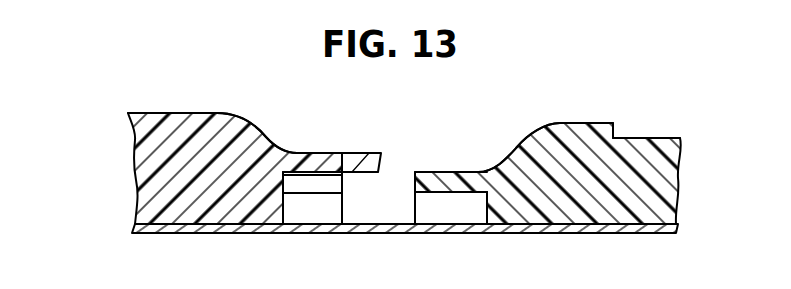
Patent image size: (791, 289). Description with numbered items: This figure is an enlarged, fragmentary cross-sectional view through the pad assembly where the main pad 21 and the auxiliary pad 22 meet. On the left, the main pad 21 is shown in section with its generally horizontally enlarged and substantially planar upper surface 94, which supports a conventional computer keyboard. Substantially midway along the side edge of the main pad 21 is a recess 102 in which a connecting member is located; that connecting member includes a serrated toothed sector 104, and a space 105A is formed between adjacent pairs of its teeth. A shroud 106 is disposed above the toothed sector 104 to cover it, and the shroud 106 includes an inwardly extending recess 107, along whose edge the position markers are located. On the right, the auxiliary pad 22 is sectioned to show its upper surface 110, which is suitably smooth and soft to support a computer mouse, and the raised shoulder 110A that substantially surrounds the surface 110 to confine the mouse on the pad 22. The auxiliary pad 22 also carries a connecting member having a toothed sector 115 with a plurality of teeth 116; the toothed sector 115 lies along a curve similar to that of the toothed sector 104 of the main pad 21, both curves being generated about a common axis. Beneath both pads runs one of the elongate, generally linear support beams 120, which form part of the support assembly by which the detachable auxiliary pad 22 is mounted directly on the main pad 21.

The main pad 21 is at (153, 142).
The upper surface 94 is at (159, 113).
The recess 102 is at (268, 136).
The shroud 106 is at (330, 158).
The recess 107 is at (363, 163).
The space 105A is at (306, 184).
The toothed sector 104 is at (358, 190).
The auxiliary pad 22 is at (578, 119).
The raised shoulder 110A is at (555, 124).
The upper surface 110 is at (663, 138).
The toothed sector 115 is at (460, 165).
The teeth 116 is at (448, 183).
The support beams 120 is at (288, 226).